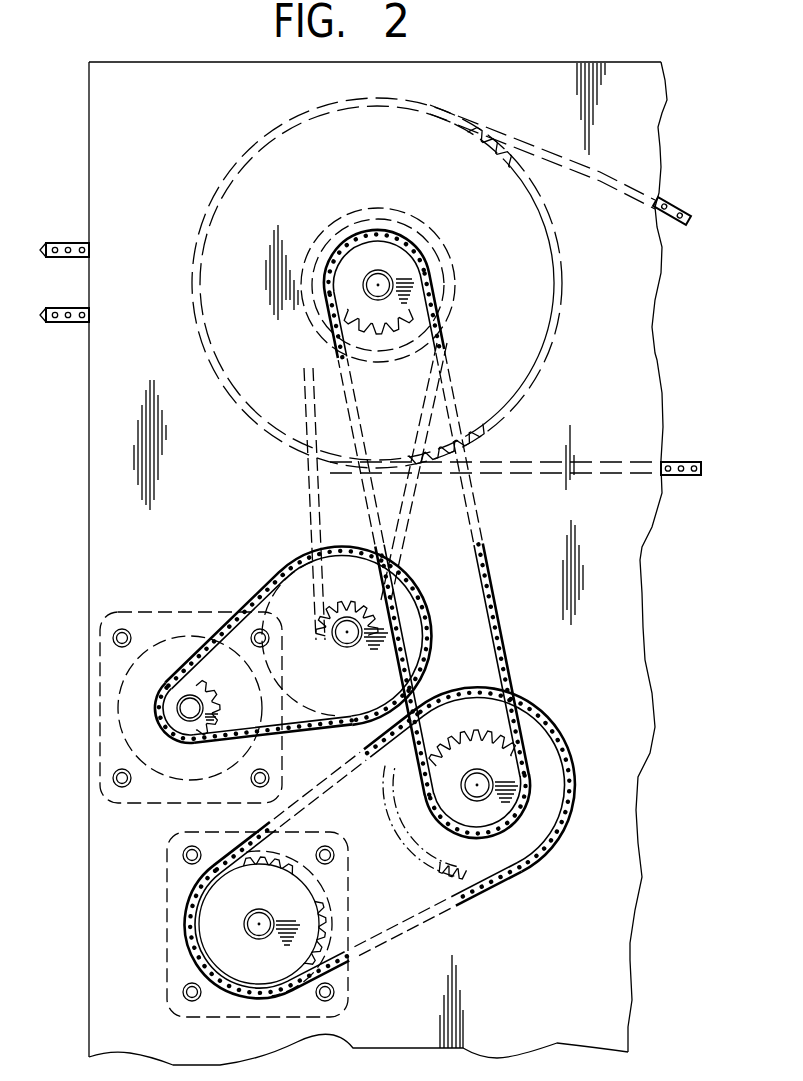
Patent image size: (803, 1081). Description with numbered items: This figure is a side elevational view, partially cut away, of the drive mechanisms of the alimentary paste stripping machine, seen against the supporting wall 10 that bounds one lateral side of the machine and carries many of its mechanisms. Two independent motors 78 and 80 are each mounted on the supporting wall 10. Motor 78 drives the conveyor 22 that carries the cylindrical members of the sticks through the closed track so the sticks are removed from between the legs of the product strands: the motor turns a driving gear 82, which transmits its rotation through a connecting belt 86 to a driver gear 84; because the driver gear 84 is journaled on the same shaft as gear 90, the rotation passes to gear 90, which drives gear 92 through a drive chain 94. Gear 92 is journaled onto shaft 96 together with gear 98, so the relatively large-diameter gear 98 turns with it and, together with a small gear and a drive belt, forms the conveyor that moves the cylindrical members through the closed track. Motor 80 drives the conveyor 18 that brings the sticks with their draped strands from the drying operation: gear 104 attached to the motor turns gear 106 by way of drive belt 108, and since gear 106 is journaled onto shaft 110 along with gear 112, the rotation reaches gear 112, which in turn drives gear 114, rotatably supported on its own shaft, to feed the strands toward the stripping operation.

The supporting wall 10 is at (168, 76).
The conveyor 18 is at (62, 258).
The conveyor 22 is at (678, 201).
The motor 78 is at (186, 958).
The motor 80 is at (117, 712).
The driving gear 82 is at (310, 910).
The driver gear 84 is at (534, 835).
The connecting belt 86 is at (481, 898).
The gear 90 is at (485, 745).
The gear 92 is at (413, 277).
The drive chain 94 is at (488, 548).
The shaft 96 is at (389, 292).
The gear 98 is at (561, 272).
The gear 104 is at (212, 700).
The gear 106 is at (407, 643).
The drive belt 108 is at (331, 734).
The shaft 110 is at (347, 645).
The gear 112 is at (358, 593).
The gear 114 is at (333, 226).